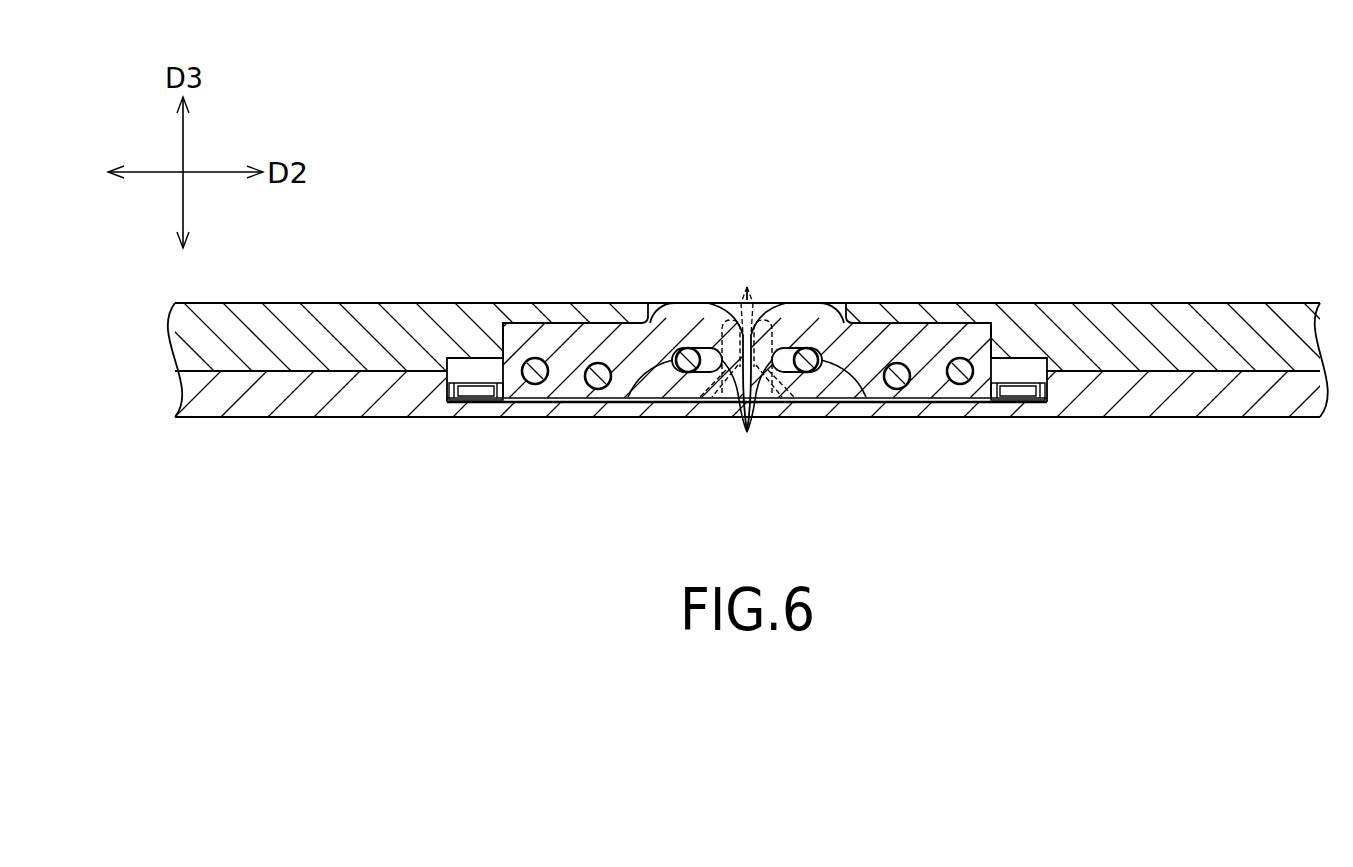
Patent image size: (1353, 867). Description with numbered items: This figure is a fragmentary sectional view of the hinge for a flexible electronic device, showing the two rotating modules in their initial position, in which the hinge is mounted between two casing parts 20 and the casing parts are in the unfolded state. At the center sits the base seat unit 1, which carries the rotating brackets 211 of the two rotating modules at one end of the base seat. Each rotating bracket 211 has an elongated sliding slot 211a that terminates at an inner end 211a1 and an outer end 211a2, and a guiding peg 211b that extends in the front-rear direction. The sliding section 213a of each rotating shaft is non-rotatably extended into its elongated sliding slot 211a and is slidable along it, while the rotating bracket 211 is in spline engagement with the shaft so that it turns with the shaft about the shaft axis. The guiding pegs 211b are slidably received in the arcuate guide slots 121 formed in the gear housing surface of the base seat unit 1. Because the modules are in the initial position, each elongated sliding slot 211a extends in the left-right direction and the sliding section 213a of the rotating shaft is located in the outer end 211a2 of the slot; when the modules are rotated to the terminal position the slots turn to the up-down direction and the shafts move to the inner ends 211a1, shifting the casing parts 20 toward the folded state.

The base seat unit 1 is at (712, 400).
The casing part 20 is at (1210, 418).
The arcuate guide slot 121 is at (772, 393).
The rotating bracket 211 is at (927, 320).
The elongated sliding slot 211a is at (794, 340).
The inner end 211a1 is at (747, 433).
The outer end 211a2 is at (866, 397).
The guiding peg 211b is at (750, 275).
The sliding section 213a is at (808, 347).